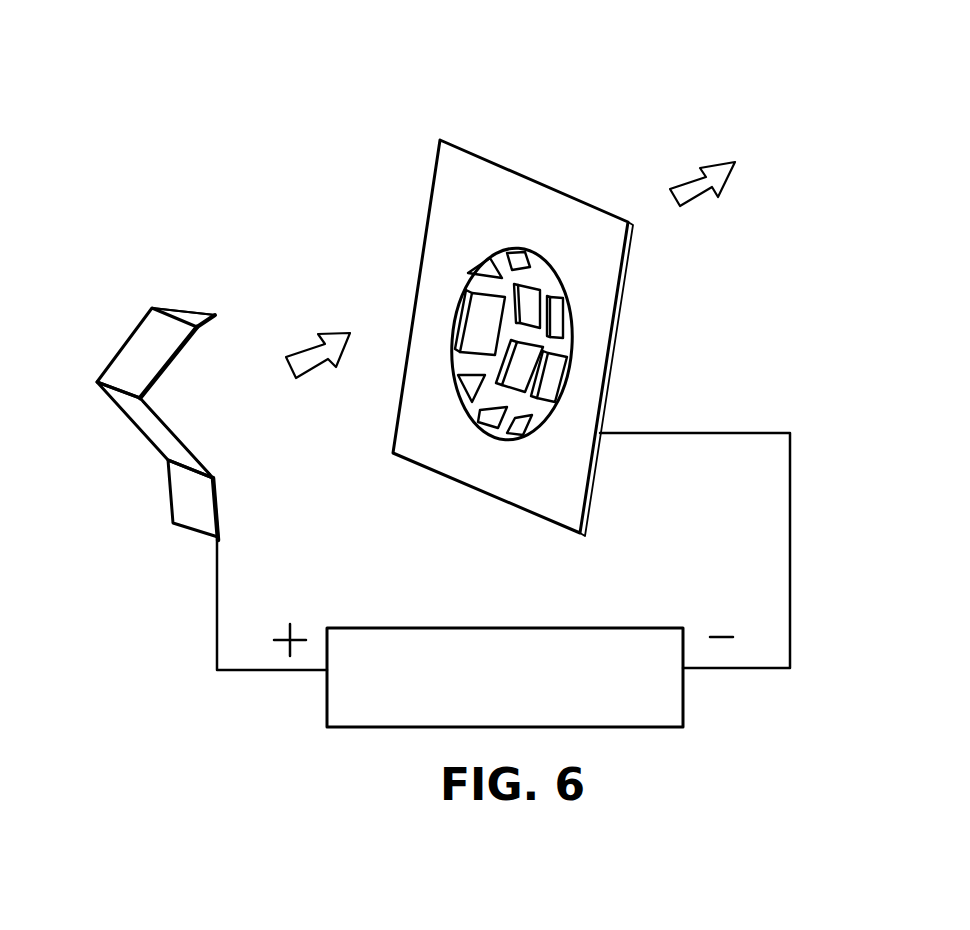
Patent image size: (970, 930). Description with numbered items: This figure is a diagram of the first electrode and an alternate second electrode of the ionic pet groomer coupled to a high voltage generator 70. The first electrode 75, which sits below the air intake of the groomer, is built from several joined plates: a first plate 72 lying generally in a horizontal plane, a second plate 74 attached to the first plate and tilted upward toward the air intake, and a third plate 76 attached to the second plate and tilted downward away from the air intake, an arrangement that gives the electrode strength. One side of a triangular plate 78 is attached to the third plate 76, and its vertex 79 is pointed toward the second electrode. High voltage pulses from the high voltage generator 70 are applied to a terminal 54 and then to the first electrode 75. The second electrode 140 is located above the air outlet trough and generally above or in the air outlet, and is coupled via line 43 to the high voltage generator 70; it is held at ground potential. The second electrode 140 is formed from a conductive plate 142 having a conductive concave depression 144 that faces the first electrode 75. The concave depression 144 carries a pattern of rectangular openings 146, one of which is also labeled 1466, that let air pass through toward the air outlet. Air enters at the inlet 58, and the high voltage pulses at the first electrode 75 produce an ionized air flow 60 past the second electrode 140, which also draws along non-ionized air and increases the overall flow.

The second electrode 140 is at (608, 296).
The conductive plate 142 is at (500, 136).
The conductive concave depression 144 is at (634, 284).
The rectangular openings 146 is at (480, 323).
The grill aperture 1466 is at (523, 372).
The ionized air flow 60 is at (893, 183).
The air inlet 58 is at (252, 392).
The first electrode 75 is at (157, 418).
The third plate 76 is at (155, 342).
The triangular plate 78 is at (180, 298).
The vertex 79 is at (217, 313).
The second plate 74 is at (140, 420).
The first plate 72 is at (185, 517).
The terminal 54 is at (217, 612).
The line 43 is at (793, 597).
The high voltage generator 70 is at (673, 707).